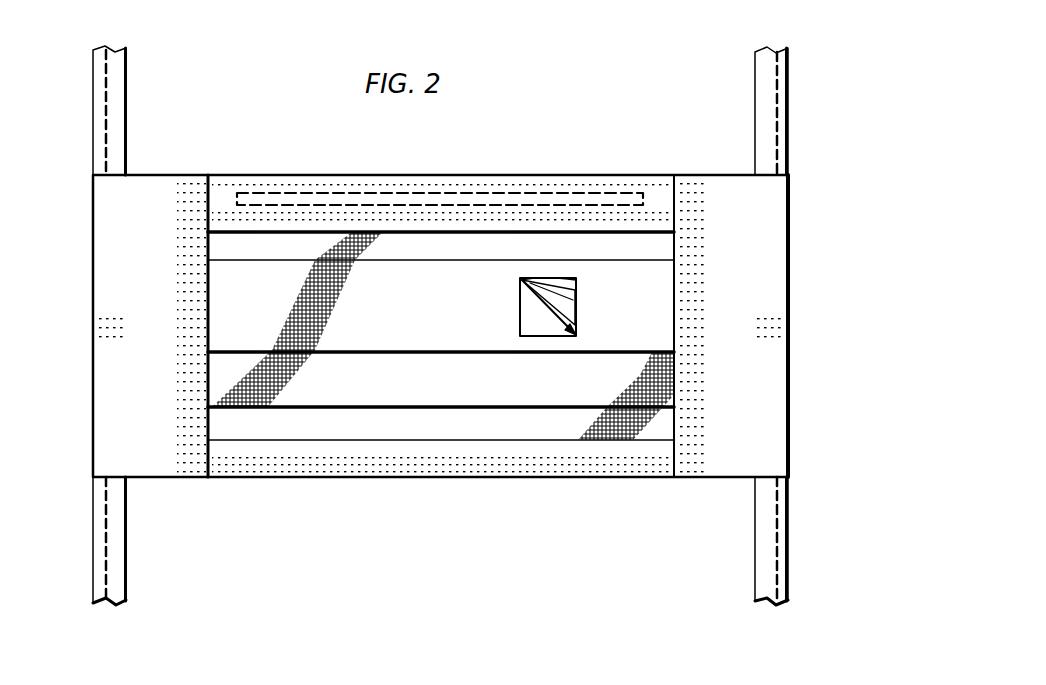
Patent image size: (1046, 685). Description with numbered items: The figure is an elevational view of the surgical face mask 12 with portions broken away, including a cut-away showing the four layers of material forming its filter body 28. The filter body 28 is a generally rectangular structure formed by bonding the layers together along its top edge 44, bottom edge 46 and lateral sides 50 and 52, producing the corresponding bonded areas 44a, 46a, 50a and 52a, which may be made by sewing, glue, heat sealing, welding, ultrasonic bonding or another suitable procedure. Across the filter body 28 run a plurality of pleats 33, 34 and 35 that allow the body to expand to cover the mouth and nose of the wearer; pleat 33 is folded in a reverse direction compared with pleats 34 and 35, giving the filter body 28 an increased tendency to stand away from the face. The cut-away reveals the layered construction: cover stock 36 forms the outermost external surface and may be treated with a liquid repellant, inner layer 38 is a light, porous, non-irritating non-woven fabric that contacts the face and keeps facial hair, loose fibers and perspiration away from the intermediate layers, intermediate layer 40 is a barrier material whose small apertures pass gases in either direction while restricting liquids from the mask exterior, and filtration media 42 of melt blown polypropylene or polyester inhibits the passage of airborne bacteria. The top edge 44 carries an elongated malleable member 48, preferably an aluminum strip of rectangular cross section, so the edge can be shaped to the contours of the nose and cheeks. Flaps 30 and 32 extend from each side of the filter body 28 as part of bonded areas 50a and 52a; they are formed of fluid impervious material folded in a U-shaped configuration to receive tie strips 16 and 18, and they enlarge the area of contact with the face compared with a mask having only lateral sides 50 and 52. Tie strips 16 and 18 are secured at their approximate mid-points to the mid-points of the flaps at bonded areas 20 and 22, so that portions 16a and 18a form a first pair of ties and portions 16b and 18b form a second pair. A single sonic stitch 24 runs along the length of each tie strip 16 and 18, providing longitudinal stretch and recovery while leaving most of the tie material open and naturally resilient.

The mask 12 is at (391, 508).
The tie strip 16 is at (149, 325).
The portion of tie strip 16a is at (118, 103).
The portion of tie strip 16b is at (120, 563).
The tie strip 18 is at (812, 325).
The portion of tie strip 18a is at (783, 78).
The portion of tie strip 18b is at (783, 572).
The bonded area 20 is at (98, 333).
The bonded area 22 is at (785, 326).
The single sonic stitch 24 is at (783, 137).
The filter body 28 is at (441, 327).
The flap 30 is at (165, 189).
The flap 32 is at (722, 188).
The pleat 33 is at (297, 258).
The pleat 34 is at (364, 358).
The pleat 35 is at (440, 412).
The cover stock 36 is at (347, 396).
The inner layer 38 is at (554, 307).
The intermediate layer 40 is at (580, 320).
The filtration media 42 is at (580, 303).
The top edge 44 is at (445, 176).
The bonded area 44a is at (523, 186).
The bottom edge 46 is at (491, 478).
The bonded area 46a is at (594, 478).
The malleable member 48 is at (378, 198).
The lateral side 50 is at (207, 324).
The bonded area 50a is at (183, 265).
The lateral side 52 is at (674, 325).
The bonded area 52a is at (700, 263).